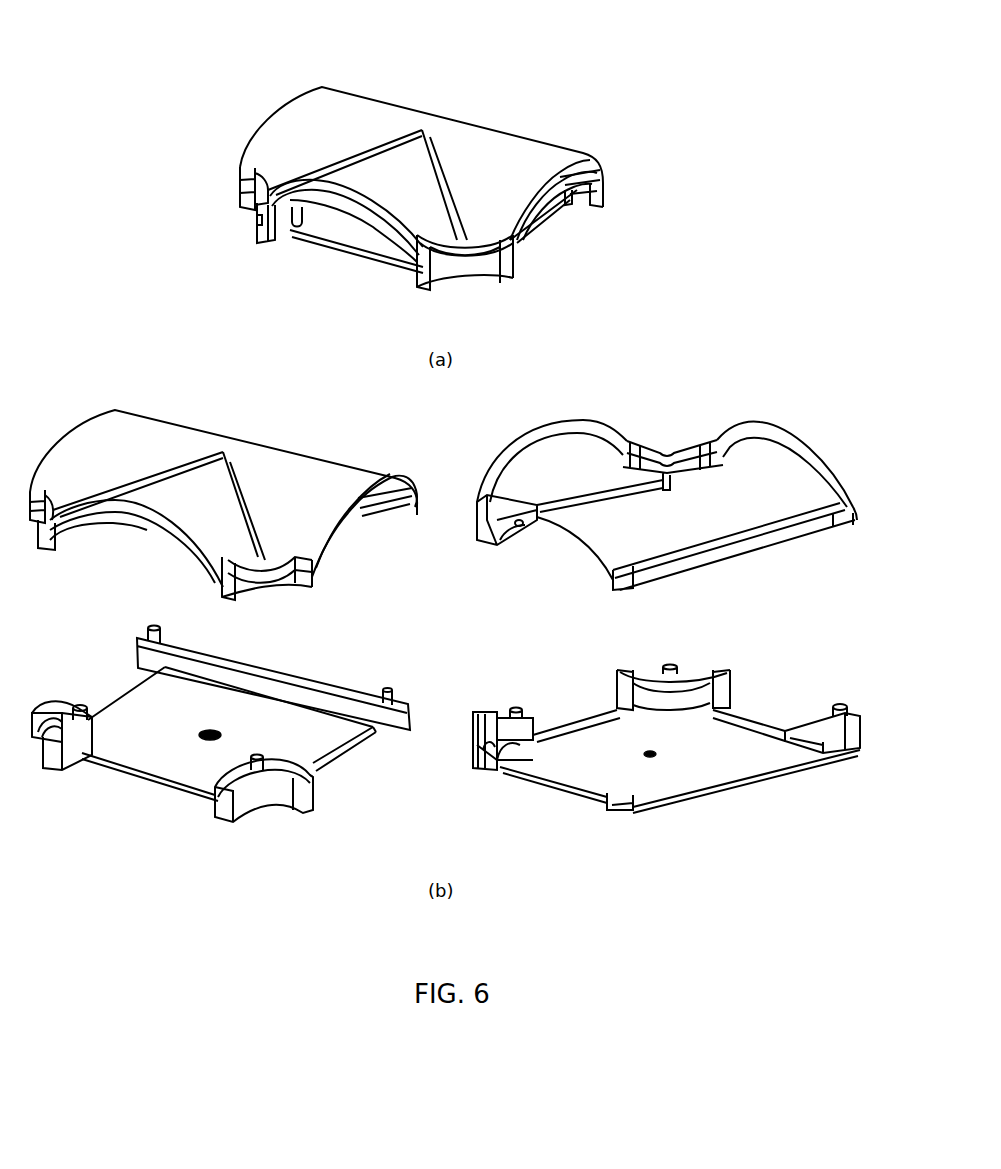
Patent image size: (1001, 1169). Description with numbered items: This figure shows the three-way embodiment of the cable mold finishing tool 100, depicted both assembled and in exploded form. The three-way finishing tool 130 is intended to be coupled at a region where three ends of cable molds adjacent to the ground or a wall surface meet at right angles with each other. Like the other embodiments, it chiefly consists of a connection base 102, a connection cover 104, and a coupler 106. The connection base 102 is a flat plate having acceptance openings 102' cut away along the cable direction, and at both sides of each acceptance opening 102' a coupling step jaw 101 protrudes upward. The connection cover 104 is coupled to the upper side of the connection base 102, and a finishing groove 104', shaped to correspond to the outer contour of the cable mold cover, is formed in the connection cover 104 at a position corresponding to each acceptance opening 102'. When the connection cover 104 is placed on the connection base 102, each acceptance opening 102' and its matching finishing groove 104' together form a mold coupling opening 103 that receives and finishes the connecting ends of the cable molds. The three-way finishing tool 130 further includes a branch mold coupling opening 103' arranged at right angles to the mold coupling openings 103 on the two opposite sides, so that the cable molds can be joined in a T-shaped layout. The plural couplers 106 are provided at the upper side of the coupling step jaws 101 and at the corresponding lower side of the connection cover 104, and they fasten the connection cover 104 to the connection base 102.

The cable mold finishing tool 100 is at (118, 30).
The coupling step jaw 101 is at (313, 693).
The connection base 102 is at (446, 738).
The acceptance opening 102' is at (322, 522).
The mold coupling opening 103 is at (431, 184).
The branch mold coupling opening 103' is at (227, 252).
The connection cover 104 is at (443, 520).
The finishing groove 104' is at (437, 234).
The coupler 106 is at (513, 712).
The three-way finishing tool 130 is at (452, 623).